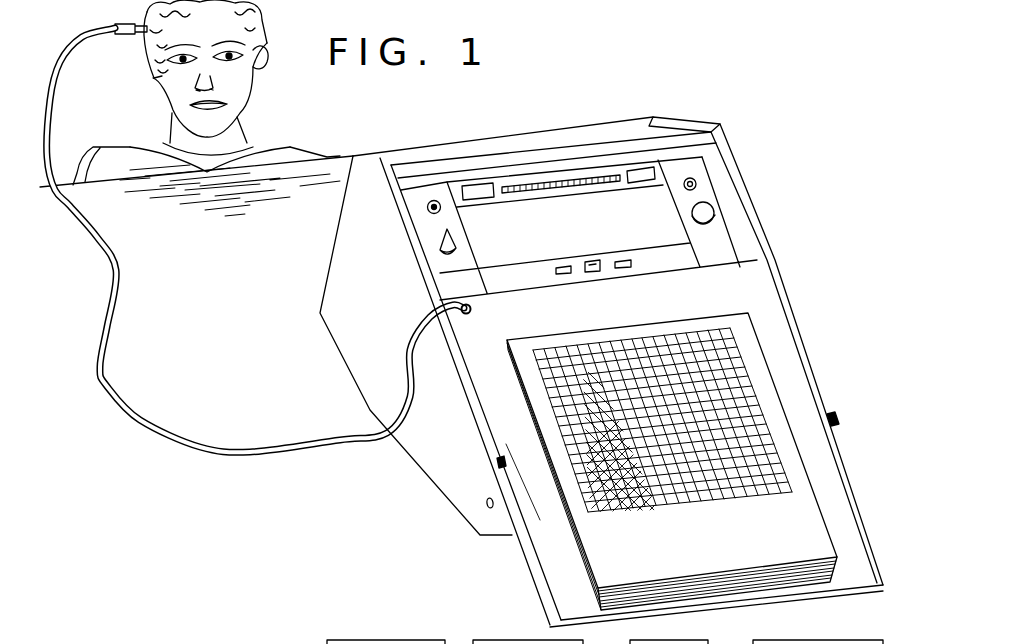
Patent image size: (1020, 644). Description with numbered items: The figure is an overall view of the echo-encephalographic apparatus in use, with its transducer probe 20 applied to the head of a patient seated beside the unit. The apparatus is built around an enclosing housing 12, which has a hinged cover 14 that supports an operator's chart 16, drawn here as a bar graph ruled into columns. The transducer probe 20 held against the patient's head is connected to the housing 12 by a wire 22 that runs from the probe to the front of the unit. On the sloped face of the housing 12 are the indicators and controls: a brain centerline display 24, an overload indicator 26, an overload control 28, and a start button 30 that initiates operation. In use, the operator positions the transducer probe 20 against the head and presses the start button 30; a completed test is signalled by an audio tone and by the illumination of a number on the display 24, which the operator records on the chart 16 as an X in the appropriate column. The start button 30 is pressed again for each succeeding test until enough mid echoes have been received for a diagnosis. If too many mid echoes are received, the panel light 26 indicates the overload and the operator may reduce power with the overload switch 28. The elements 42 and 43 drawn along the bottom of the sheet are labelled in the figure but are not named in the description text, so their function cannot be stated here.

The housing 12 is at (421, 437).
The hinged cover 14 is at (533, 557).
The operator's chart 16 is at (740, 496).
The transducer probe 20 is at (140, 36).
The wire 22 is at (122, 290).
The brain centerline display 24 is at (573, 186).
The overload indicator 26 is at (427, 208).
The overload switch 28 is at (441, 242).
The start button 30 is at (711, 211).
The support leg 42 is at (403, 640).
The support leg 43 is at (520, 640).